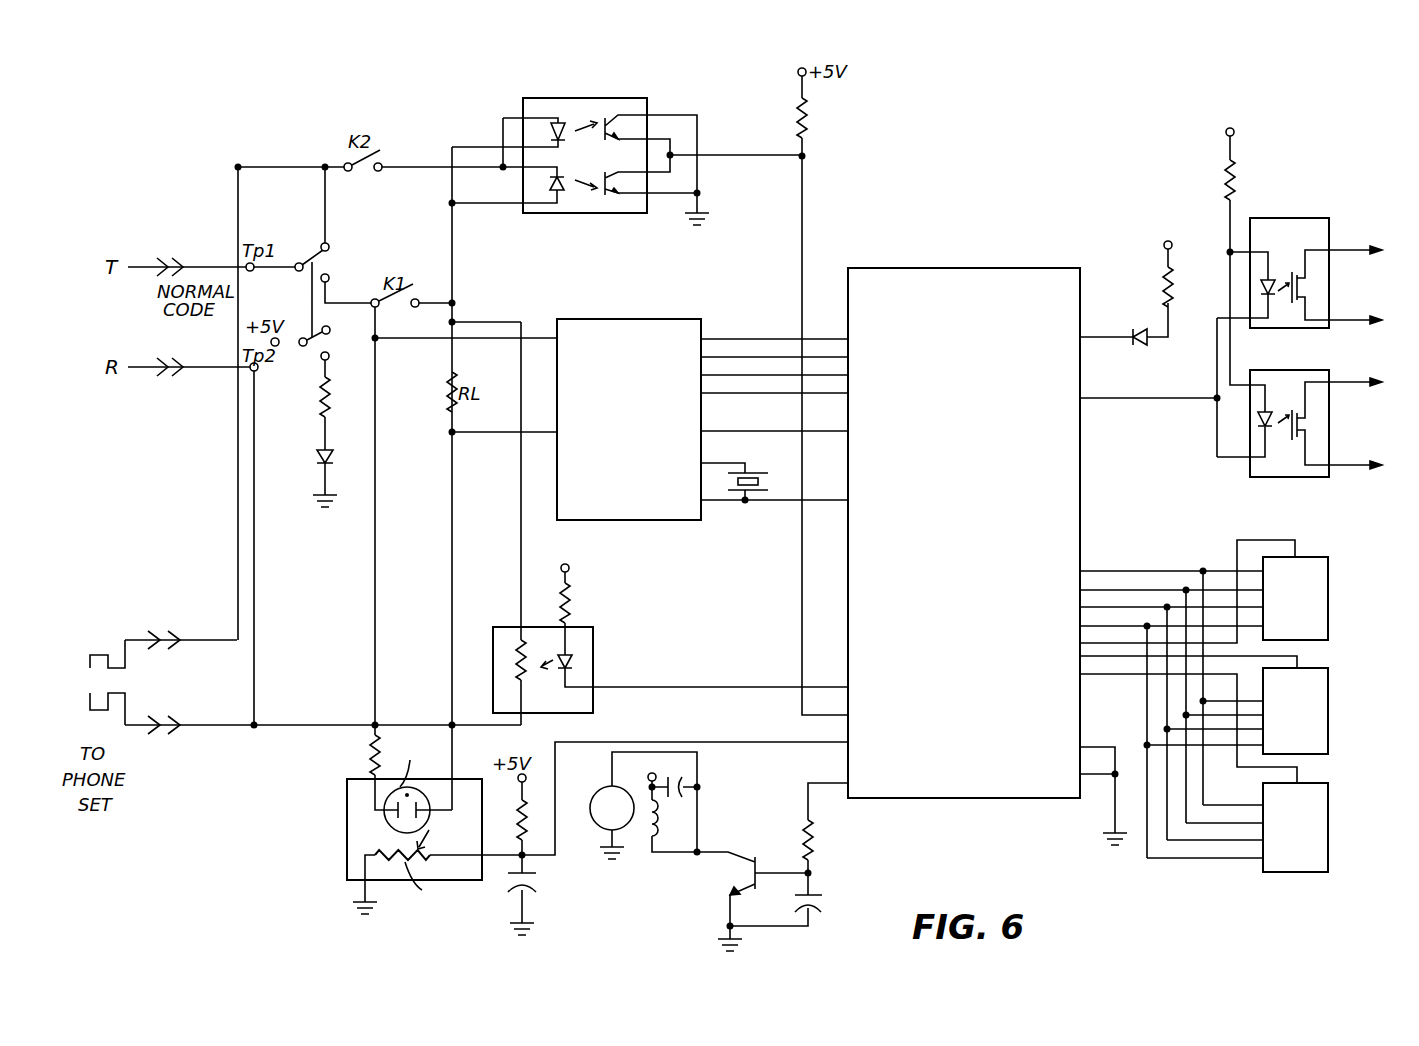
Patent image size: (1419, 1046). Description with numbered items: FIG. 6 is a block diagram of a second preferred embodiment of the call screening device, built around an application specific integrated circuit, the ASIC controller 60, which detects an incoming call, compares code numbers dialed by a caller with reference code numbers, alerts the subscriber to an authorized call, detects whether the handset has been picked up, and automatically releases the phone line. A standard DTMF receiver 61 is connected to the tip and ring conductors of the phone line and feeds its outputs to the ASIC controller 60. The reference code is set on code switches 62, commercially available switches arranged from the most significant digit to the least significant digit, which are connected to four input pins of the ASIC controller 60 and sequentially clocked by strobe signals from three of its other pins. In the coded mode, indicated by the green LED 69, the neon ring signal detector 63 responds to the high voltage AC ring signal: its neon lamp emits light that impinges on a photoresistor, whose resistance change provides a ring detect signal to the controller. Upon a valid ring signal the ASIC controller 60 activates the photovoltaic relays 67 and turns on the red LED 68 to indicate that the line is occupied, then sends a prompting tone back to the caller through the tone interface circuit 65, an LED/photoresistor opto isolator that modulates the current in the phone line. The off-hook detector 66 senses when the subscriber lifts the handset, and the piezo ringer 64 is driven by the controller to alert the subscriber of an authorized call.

The ASIC controller 60 is at (950, 268).
The DTMF receiver 61 is at (625, 319).
The code switches 62 is at (1330, 585).
The neon ring signal detector 63 is at (347, 818).
The piezo ringer 64 is at (597, 825).
The tone interface circuit 65 is at (593, 660).
The off-hook detector 66 is at (600, 98).
The photovoltaic relays 67 is at (1285, 218).
The red LED 68 is at (1139, 348).
The green LED 69 is at (316, 456).